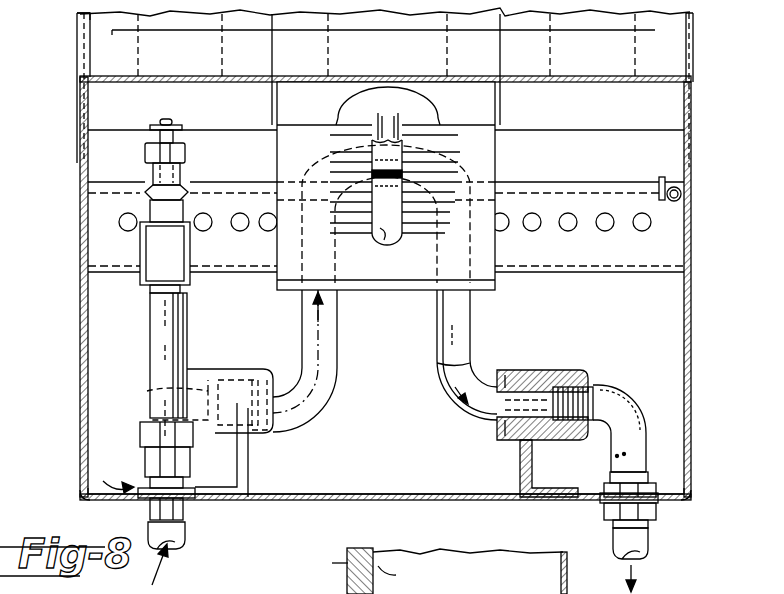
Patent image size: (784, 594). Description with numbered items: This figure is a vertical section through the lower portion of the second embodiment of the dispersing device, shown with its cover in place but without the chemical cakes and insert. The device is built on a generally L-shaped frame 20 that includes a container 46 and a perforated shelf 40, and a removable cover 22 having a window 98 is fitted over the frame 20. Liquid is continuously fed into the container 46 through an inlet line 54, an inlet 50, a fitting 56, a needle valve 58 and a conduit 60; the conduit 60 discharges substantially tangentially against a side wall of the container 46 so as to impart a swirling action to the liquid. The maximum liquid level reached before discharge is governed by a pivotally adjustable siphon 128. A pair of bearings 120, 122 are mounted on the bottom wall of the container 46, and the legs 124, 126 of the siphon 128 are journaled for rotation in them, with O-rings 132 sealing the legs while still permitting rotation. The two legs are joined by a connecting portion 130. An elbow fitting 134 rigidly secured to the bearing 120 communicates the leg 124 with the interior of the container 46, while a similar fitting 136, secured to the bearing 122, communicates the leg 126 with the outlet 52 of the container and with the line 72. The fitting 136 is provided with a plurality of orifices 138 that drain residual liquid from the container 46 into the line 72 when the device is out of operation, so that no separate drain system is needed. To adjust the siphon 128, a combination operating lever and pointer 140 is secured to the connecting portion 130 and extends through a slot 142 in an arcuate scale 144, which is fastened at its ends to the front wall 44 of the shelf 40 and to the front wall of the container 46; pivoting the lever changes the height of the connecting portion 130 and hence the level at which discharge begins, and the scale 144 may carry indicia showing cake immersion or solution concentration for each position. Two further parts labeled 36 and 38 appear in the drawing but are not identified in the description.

The frame 20 is at (76, 373).
The removable cover 22 is at (70, 52).
The flange 38 is at (100, 60).
The window 98 is at (198, 18).
The divider wall 36 is at (252, 62).
The front wall 44 is at (562, 160).
The conduit 60 is at (253, 183).
The needle valve 58 is at (158, 174).
The fitting 56 is at (158, 326).
The container 46 is at (102, 310).
The perforated shelf 40 is at (604, 280).
The combination operating lever and pointer 140 is at (364, 102).
The connecting portion 130 is at (395, 153).
The slot 142 is at (383, 233).
The arcuate scale 144 is at (405, 263).
The siphon 128 is at (290, 340).
The leg 124 is at (355, 354).
The leg 126 is at (443, 335).
The O-rings 132 is at (508, 383).
The elbow fitting 134 is at (142, 397).
The bearing 120 is at (264, 434).
The bearing 122 is at (505, 436).
The fitting 136 is at (618, 392).
The orifices 138 is at (632, 453).
The inlet 50 is at (193, 510).
The inlet line 54 is at (180, 534).
The outlet 52 is at (657, 510).
The line 72 is at (648, 547).